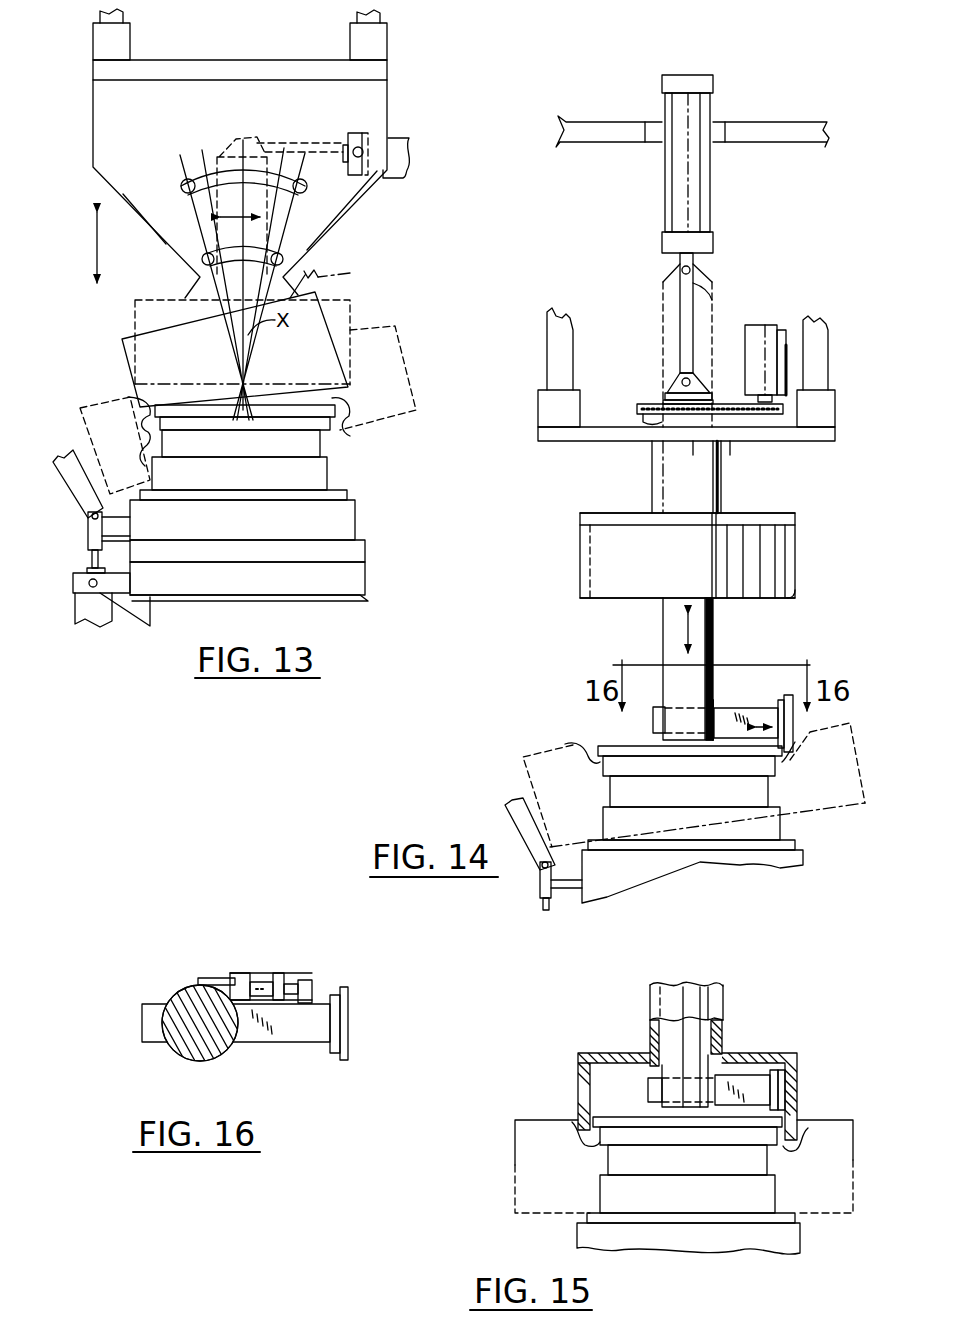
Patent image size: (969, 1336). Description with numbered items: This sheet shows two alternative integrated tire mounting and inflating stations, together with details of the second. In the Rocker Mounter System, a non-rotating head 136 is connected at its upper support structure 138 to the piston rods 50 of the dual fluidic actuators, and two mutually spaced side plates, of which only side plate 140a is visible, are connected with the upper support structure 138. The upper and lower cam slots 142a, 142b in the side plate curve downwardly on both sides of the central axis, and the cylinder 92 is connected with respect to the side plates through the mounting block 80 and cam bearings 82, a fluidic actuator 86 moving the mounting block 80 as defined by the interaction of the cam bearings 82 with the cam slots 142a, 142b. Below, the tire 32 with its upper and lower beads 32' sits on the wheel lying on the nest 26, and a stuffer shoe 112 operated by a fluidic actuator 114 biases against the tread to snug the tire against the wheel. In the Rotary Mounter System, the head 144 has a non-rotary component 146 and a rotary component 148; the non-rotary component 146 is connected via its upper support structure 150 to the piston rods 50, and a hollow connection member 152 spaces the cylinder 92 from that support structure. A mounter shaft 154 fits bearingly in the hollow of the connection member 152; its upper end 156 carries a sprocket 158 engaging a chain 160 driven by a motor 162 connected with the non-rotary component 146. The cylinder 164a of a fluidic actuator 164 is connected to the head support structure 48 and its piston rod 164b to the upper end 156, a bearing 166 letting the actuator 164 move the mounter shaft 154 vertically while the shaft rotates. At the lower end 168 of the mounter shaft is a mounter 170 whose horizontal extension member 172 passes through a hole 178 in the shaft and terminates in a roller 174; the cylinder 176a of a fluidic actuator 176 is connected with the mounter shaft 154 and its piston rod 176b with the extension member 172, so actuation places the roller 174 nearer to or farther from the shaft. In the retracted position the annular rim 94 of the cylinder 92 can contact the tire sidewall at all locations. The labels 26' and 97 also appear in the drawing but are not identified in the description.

In FIG. 13, the nest 26 is at (252, 503).
In FIG. 14, the nest 26 is at (704, 824).
In FIG. 15, the nest 26 is at (673, 1185).
In FIG. 13, the rim flange of pedestal 26' is at (266, 431).
In FIG. 13, the tire 32 is at (391, 378).
In FIG. 14, the tire 32 is at (700, 775).
In FIG. 15, the tire 32 is at (664, 1182).
In FIG. 13, the upper and lower beads 32' is at (115, 445).
In FIG. 14, the head support structure 48 is at (692, 118).
In FIG. 13, the piston rods 50 is at (240, 34).
In FIG. 14, the piston rods 50 is at (684, 367).
In FIG. 13, the mounting block 80 is at (242, 272).
In FIG. 13, the cam bearings 82 is at (232, 218).
In FIG. 13, the fluidic actuator 86 is at (312, 136).
In FIG. 13, the cylinder 92 is at (260, 347).
In FIG. 14, the cylinder 92 is at (711, 555).
In FIG. 15, the cylinder 92 is at (693, 1100).
In FIG. 14, the table rim 94 is at (815, 596).
In FIG. 15, the table rim 94 is at (701, 1147).
In FIG. 13, the pivot reference line 97 is at (334, 279).
In FIG. 13, the shoe 112 is at (69, 490).
In FIG. 14, the shoe 112 is at (521, 852).
In FIG. 13, the fluidic actuator 114 is at (92, 569).
In FIG. 13, the head 136 is at (101, 266).
In FIG. 13, the upper support structure 138 is at (240, 54).
In FIG. 13, the side plate 140a is at (409, 173).
In FIG. 13, the upper cam slot 142a is at (274, 186).
In FIG. 13, the lower cam slot 142b is at (275, 235).
In FIG. 14, the head 144 is at (638, 555).
In FIG. 14, the non-rotary component 146 is at (638, 477).
In FIG. 14, the rotary component 148 is at (634, 669).
In FIG. 14, the upper support structure 150 is at (691, 448).
In FIG. 14, the hollow connection member 152 is at (756, 477).
In FIG. 15, the hollow connection member 152 is at (655, 1044).
In FIG. 14, the mounter shaft 154 is at (741, 669).
In FIG. 16, the mounter shaft 154 is at (190, 1032).
In FIG. 15, the mounter shaft 154 is at (715, 1032).
In FIG. 14, the upper end 156 is at (685, 415).
In FIG. 14, the sprocket 158 is at (662, 385).
In FIG. 14, the chain 160 is at (728, 442).
In FIG. 14, the motor 162 is at (780, 340).
In FIG. 14, the fluidic actuator 164 is at (726, 164).
In FIG. 14, the cylinder 164a is at (725, 162).
In FIG. 14, the piston rod 164b is at (722, 313).
In FIG. 14, the bearing 166 is at (669, 345).
In FIG. 14, the lower end 168 is at (741, 689).
In FIG. 14, the mounter 170 is at (630, 690).
In FIG. 14, the horizontal extension member 172 is at (746, 723).
In FIG. 16, the horizontal extension member 172 is at (236, 1041).
In FIG. 15, the horizontal extension member 172 is at (765, 1063).
In FIG. 14, the roller 174 is at (785, 723).
In FIG. 16, the roller 174 is at (363, 1038).
In FIG. 15, the roller 174 is at (823, 1066).
In FIG. 16, the fluidic actuator 176 is at (258, 958).
In FIG. 16, the cylinder 176a is at (235, 968).
In FIG. 16, the piston rod 176b is at (324, 976).
In FIG. 15, the hole 178 is at (660, 1086).